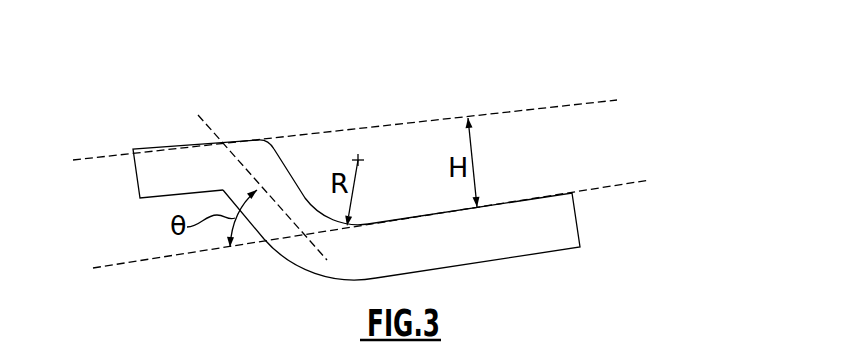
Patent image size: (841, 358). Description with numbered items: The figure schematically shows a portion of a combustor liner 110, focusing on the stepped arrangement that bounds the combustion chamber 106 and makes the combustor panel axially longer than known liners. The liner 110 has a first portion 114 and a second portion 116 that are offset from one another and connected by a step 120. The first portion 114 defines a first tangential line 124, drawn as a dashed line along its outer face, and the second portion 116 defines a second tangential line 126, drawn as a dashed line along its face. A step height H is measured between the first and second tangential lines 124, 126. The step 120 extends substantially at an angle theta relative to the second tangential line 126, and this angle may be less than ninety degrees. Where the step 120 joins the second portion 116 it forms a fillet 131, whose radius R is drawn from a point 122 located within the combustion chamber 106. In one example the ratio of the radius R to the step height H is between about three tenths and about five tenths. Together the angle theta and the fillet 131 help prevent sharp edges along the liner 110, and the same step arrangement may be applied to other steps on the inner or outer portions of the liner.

The combustion chamber 106 is at (448, 77).
The combustor liner 110 is at (298, 197).
The first portion 114 is at (163, 166).
The second portion 116 is at (510, 245).
The step 120 is at (290, 253).
The point 122 is at (360, 158).
The first tangential line 124 is at (547, 107).
The second tangential line 126 is at (607, 188).
The fillet 131 is at (322, 215).